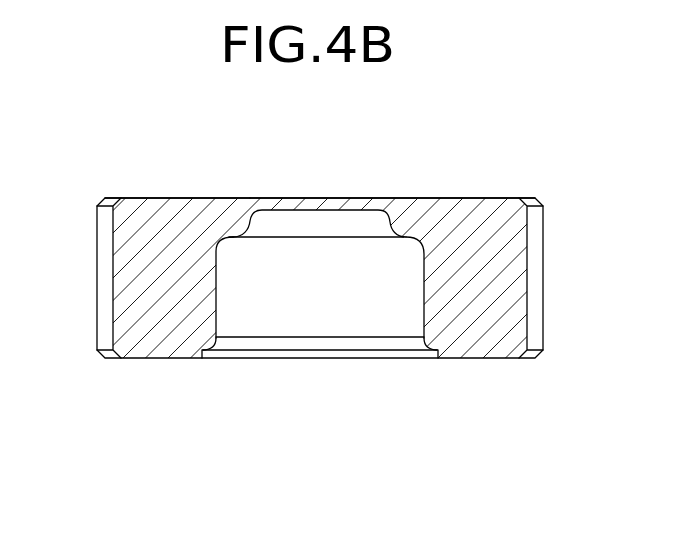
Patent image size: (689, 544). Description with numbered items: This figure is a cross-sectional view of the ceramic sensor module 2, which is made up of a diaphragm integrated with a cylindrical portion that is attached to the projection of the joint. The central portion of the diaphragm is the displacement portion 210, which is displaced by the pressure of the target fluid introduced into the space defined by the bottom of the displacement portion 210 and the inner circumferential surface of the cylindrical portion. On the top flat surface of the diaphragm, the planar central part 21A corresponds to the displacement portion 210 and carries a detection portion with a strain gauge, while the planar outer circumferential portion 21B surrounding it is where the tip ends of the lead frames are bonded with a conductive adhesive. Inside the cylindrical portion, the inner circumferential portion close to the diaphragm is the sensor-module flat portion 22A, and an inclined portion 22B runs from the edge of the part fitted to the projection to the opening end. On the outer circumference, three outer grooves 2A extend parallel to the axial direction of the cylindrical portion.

The sensor module 2 is at (518, 143).
The outer groove 2A is at (112, 291).
The planar central part 21A is at (295, 197).
The planar outer circumferential portion 21B is at (180, 197).
The displacement portion 210 is at (330, 197).
The sensor-module flat portion 22A is at (230, 240).
The inclined portion 22B is at (212, 358).